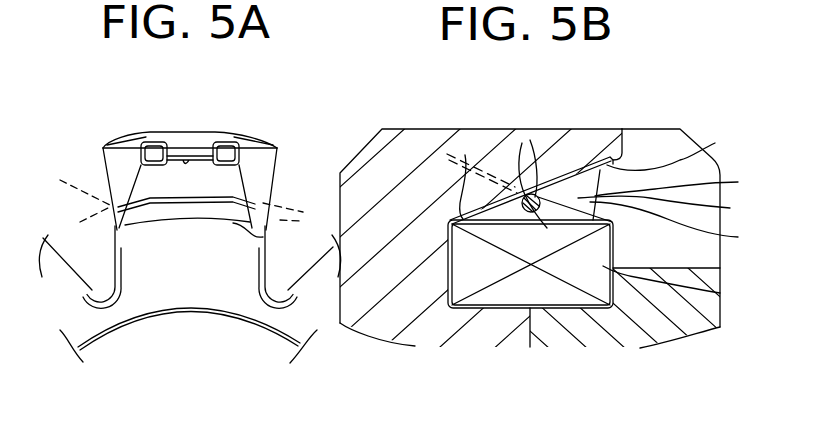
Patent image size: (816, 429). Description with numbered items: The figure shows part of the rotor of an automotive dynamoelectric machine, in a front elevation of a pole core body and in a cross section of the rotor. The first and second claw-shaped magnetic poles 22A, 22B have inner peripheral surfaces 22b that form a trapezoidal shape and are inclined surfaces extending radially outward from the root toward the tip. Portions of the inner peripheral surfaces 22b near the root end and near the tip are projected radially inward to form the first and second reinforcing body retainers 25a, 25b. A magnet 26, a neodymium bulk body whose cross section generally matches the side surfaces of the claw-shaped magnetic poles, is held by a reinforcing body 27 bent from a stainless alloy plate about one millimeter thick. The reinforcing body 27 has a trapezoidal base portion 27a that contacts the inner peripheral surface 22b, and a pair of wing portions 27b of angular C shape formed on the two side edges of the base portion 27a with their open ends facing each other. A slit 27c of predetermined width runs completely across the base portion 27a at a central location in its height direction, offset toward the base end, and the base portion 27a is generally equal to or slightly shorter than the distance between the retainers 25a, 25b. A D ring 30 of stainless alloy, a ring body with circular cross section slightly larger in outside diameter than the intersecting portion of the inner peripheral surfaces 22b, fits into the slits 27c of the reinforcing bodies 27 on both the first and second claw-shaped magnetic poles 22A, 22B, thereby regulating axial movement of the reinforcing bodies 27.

In FIG. 5A, the first claw-shaped magnetic pole 22A is at (152, 135).
In FIG. 5B, the first claw-shaped magnetic pole 22A is at (633, 158).
In FIG. 5B, the second claw-shaped magnetic pole 22B is at (427, 148).
In FIG. 5B, the inner peripheral surface 22b is at (600, 170).
In FIG. 5A, the first reinforcing body retainer 25a is at (185, 162).
In FIG. 5B, the first reinforcing body retainer 25a is at (685, 149).
In FIG. 5A, the second reinforcing body retainer 25b is at (265, 242).
In FIG. 5B, the second reinforcing body retainer 25b is at (465, 155).
In FIG. 5A, the magnet 26 is at (227, 153).
In FIG. 5A, the reinforcing body 27 is at (260, 150).
In FIG. 5B, the reinforcing body 27 is at (669, 211).
In FIG. 5A, the base portion 27a is at (153, 183).
In FIG. 5B, the base portion 27a is at (689, 183).
In FIG. 5A, the wing portions 27b is at (265, 173).
In FIG. 5B, the wing portions 27b is at (685, 228).
In FIG. 5A, the slit 27c is at (112, 227).
In FIG. 5B, the slit 27c is at (522, 143).
In FIG. 5A, the D ring 30 is at (166, 192).
In FIG. 5B, the D ring 30 is at (720, 293).